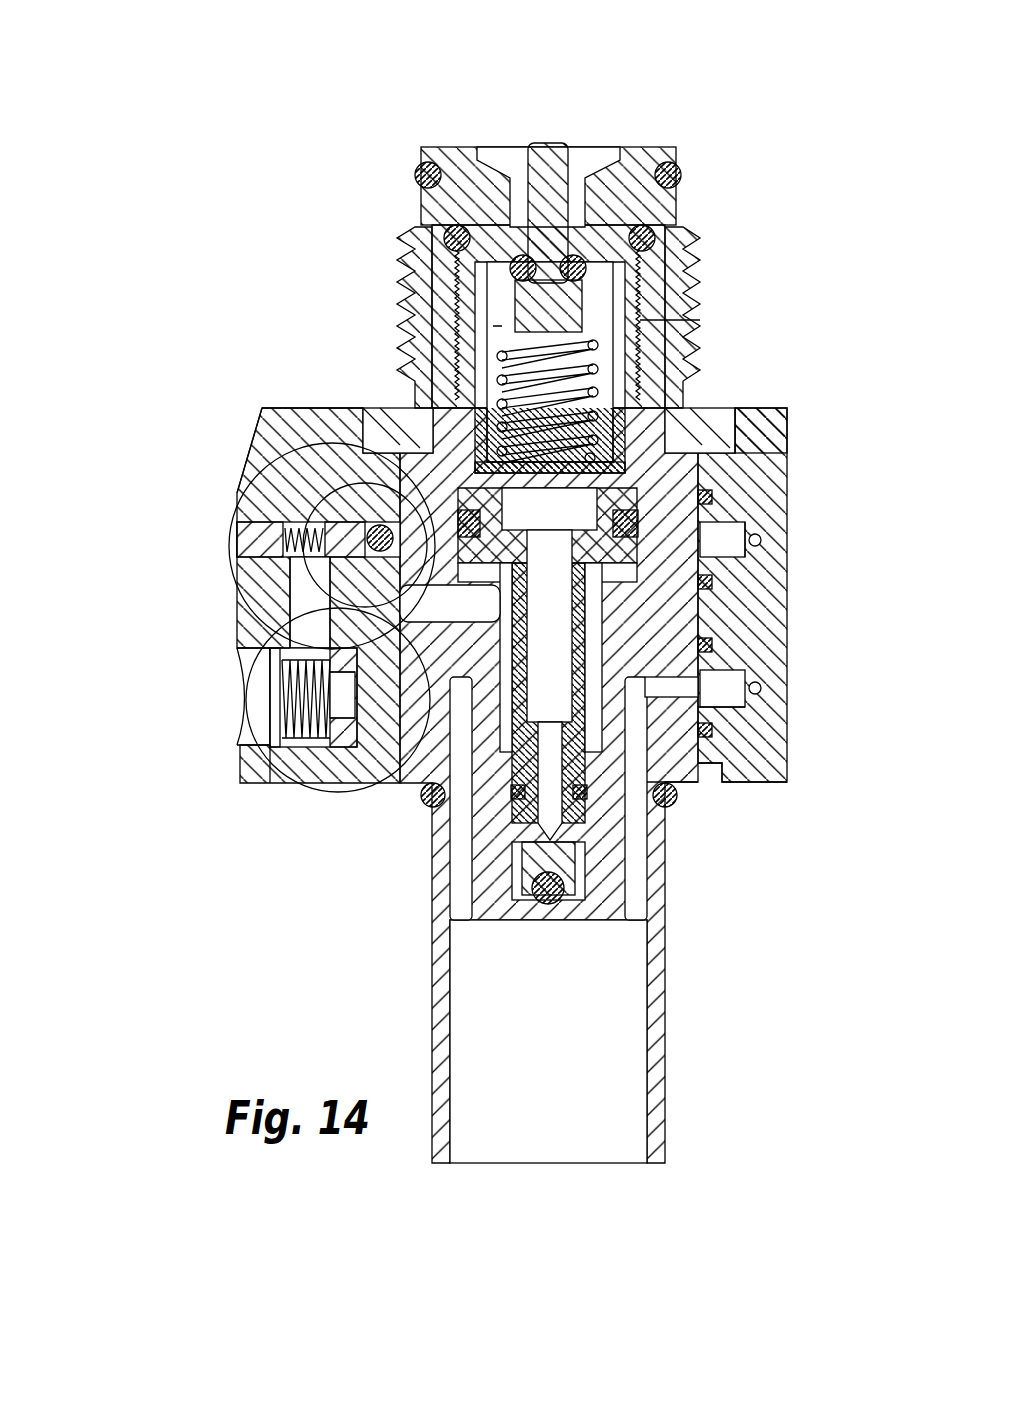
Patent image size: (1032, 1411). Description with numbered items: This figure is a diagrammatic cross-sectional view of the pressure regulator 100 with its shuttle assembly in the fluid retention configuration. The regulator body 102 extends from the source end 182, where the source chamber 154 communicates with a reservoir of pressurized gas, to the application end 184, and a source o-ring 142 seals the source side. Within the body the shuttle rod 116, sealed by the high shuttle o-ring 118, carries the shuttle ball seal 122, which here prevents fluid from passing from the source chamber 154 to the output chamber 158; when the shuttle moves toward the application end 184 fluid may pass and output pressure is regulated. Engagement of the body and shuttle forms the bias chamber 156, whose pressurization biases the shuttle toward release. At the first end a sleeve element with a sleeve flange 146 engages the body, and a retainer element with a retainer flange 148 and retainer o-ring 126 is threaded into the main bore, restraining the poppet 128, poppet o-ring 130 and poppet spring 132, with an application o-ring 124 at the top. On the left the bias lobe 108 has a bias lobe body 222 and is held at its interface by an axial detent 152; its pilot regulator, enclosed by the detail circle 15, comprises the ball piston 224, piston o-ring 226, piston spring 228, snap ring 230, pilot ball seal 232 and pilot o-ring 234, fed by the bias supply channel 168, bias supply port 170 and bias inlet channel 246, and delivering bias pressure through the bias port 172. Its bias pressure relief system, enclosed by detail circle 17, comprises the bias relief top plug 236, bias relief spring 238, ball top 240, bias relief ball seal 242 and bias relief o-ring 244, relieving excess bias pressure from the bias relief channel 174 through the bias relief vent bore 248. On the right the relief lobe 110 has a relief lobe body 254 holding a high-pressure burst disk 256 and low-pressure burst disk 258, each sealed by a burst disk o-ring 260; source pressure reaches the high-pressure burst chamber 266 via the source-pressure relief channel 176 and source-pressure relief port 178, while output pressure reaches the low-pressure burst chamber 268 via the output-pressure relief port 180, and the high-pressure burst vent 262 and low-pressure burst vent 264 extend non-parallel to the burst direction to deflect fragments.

The pressure regulator 100 is at (300, 100).
The regulator body 102 is at (735, 970).
The bias lobe 108 is at (215, 362).
The relief lobe 110 is at (850, 368).
The shuttle rod 116 is at (600, 770).
The high shuttle o-ring 118 is at (512, 790).
The shuttle ball seal 122 is at (548, 900).
The application o-ring 124 is at (700, 163).
The retainer o-ring 126 is at (700, 235).
The poppet 128 is at (548, 150).
The poppet o-ring 130 is at (413, 262).
The poppet spring 132 is at (700, 312).
The source o-ring 142 is at (675, 800).
The sleeve flange 146 is at (735, 410).
The retainer flange 148 is at (418, 218).
The axial detent 152 is at (705, 785).
The source chamber 154 is at (548, 1041).
The bias chamber 156 is at (620, 570).
The output chamber 158 is at (418, 392).
The bias supply channel 168 is at (445, 890).
The bias supply port 170 is at (400, 710).
The bias port 172 is at (450, 603).
The bias relief channel 174 is at (310, 600).
The source-pressure relief channel 176 is at (637, 888).
The source-pressure relief port 178 is at (712, 777).
The output-pressure relief port 180 is at (700, 465).
The source end 182 is at (650, 1200).
The application end 184 is at (670, 105).
The bias lobe body 222 is at (262, 410).
The ball piston 224 is at (250, 790).
The piston o-ring 226 is at (262, 800).
The piston spring 228 is at (265, 745).
The snap ring 230 is at (265, 700).
The pilot ball seal 232 is at (330, 745).
The pilot o-ring 234 is at (370, 730).
The bias relief top plug 236 is at (235, 545).
The bias relief spring 238 is at (235, 523).
The ball top 240 is at (270, 480).
The bias relief ball seal 242 is at (260, 470).
The bias relief o-ring 244 is at (310, 420).
The bias inlet channel 246 is at (290, 660).
The bias relief vent bore 248 is at (240, 600).
The relief lobe body 254 is at (780, 410).
The high-pressure burst disk 256 is at (712, 730).
The low-pressure burst disk 258 is at (712, 582).
The burst disk o-ring 260 is at (712, 497).
The high-pressure burst vent 262 is at (757, 688).
The low-pressure burst vent 264 is at (757, 540).
The high-pressure burst chamber 266 is at (712, 645).
The low-pressure burst chamber 268 is at (760, 520).
The detail circle FIG. 15 is at (296, 700).
The detail circle FIG. 17 is at (301, 546).